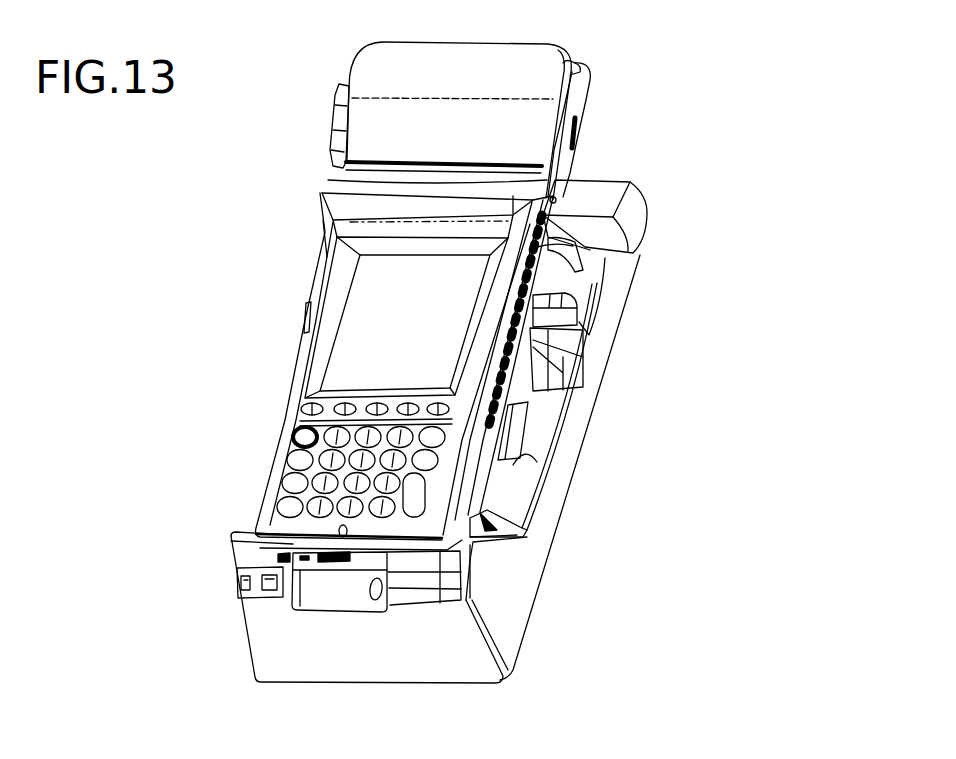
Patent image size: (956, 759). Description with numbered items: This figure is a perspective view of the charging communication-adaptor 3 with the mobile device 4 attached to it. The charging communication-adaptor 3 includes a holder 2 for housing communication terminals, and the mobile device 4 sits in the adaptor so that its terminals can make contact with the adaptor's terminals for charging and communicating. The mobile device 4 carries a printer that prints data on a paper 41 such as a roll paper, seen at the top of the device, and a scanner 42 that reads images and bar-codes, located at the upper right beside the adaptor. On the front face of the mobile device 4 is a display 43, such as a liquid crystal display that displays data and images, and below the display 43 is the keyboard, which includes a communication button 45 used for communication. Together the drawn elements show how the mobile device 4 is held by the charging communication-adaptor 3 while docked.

The holder 2 is at (515, 615).
The charging communication-adaptor 3 is at (611, 322).
The mobile device 4 is at (413, 286).
The paper 41 is at (558, 38).
The scanner 42 is at (635, 212).
The display 43 is at (386, 292).
The communication button 45 is at (470, 483).